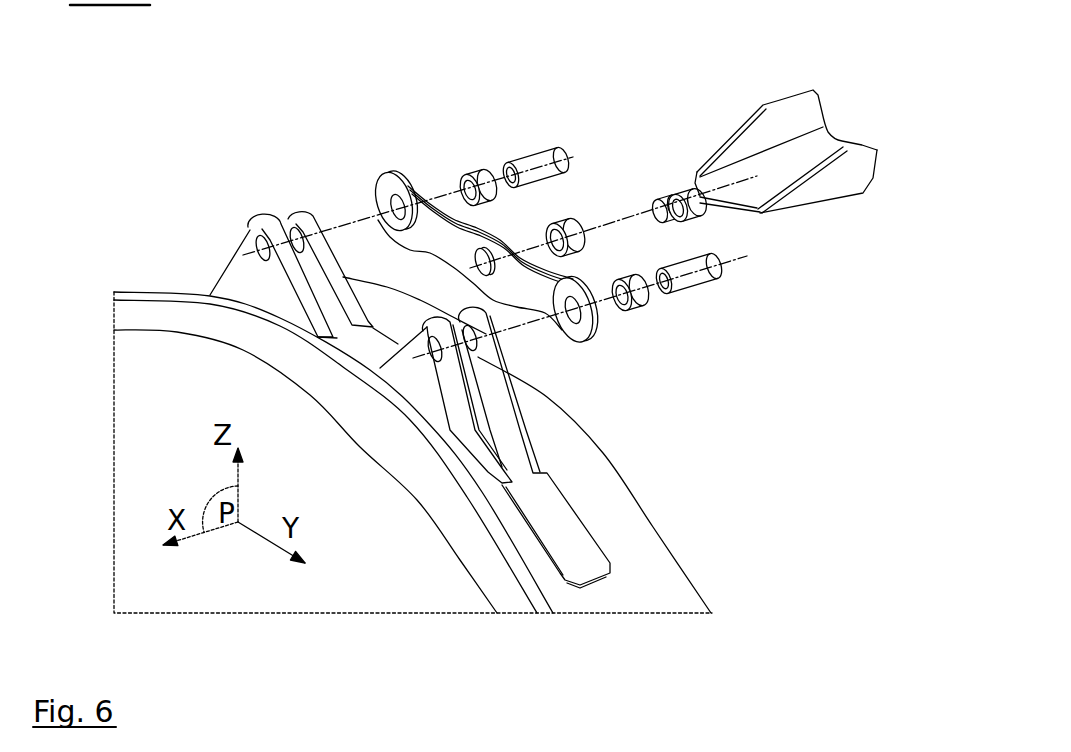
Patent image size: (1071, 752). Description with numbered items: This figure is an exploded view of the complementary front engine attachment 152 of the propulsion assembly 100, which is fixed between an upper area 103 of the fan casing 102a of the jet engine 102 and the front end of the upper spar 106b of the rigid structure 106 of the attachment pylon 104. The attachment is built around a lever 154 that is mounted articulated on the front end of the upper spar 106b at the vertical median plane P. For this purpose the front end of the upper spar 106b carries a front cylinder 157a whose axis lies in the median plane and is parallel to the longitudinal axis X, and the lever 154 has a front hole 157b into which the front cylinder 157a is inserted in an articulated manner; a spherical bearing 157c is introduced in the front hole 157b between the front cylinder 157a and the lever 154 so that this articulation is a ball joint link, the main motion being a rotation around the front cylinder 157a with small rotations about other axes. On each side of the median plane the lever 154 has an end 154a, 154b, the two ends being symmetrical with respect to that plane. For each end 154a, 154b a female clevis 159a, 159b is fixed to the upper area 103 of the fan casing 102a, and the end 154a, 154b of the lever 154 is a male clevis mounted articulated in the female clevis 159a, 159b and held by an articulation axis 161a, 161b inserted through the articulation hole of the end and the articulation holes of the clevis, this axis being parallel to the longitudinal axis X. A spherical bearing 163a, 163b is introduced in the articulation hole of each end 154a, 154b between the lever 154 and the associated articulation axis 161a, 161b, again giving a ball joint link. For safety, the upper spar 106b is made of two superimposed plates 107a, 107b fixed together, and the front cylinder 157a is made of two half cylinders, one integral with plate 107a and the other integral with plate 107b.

The propulsion assembly 100 is at (182, 207).
The jet engine 102 is at (493, 445).
The fan casing 102a is at (416, 593).
The upper area of the fan casing 103 is at (637, 543).
The attachment pylon 104 is at (767, 70).
The rigid structure 106 is at (805, 131).
The upper spar 106b is at (717, 157).
The plate 107a is at (827, 130).
The plate 107b is at (750, 213).
The complementary front engine attachment 152 is at (247, 145).
The lever 154 is at (493, 197).
The end of the lever 154a is at (585, 338).
The end of the lever 154b is at (386, 178).
The front cylinder 157a is at (673, 190).
The front hole 157b is at (377, 220).
The spherical bearing 157c is at (578, 226).
The female clevis 159a is at (490, 335).
The female clevis 159b is at (253, 224).
The articulation axis 161a is at (713, 277).
The articulation axis 161b is at (547, 150).
The spherical bearing 163a is at (647, 307).
The spherical bearing 163b is at (483, 170).